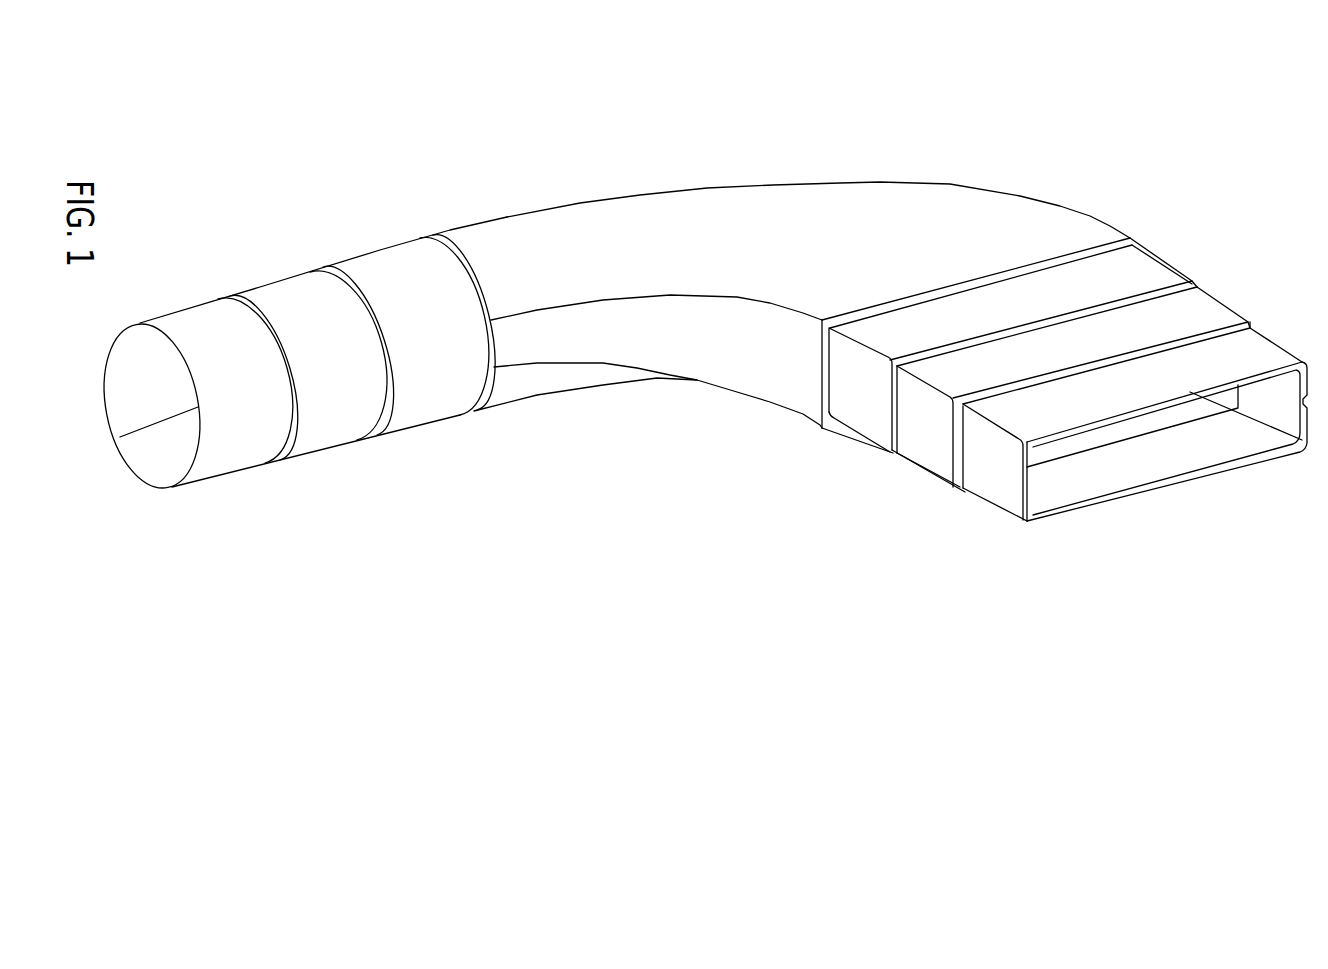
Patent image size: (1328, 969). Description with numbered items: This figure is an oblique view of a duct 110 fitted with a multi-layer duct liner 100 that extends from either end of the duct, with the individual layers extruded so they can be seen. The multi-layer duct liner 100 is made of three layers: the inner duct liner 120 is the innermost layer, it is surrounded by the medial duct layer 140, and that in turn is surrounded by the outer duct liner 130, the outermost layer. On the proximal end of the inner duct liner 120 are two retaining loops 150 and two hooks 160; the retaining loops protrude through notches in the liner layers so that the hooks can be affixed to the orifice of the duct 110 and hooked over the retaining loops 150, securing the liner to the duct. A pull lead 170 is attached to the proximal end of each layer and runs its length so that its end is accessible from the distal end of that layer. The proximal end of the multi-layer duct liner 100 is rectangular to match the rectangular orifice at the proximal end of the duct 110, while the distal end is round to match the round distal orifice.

The multi-layer duct liner 100 is at (363, 470).
The duct 110 is at (1037, 198).
The inner duct liner 120 is at (186, 314).
The outer duct liner 130 is at (386, 248).
The medial duct layer 140 is at (272, 284).
The retaining loop 150 is at (1126, 501).
The hook 160 is at (1134, 506).
The pull lead 170 is at (130, 428).